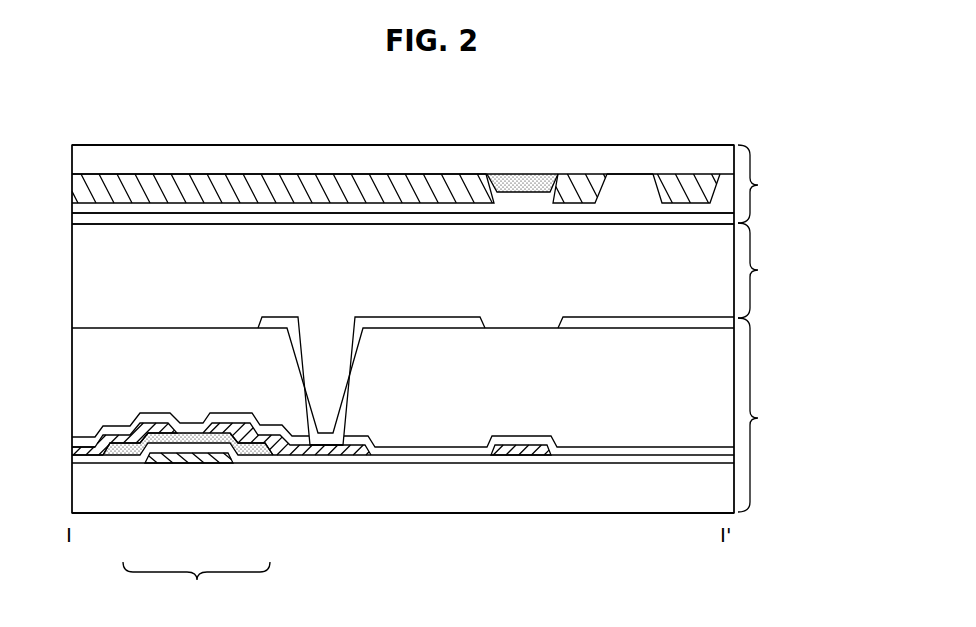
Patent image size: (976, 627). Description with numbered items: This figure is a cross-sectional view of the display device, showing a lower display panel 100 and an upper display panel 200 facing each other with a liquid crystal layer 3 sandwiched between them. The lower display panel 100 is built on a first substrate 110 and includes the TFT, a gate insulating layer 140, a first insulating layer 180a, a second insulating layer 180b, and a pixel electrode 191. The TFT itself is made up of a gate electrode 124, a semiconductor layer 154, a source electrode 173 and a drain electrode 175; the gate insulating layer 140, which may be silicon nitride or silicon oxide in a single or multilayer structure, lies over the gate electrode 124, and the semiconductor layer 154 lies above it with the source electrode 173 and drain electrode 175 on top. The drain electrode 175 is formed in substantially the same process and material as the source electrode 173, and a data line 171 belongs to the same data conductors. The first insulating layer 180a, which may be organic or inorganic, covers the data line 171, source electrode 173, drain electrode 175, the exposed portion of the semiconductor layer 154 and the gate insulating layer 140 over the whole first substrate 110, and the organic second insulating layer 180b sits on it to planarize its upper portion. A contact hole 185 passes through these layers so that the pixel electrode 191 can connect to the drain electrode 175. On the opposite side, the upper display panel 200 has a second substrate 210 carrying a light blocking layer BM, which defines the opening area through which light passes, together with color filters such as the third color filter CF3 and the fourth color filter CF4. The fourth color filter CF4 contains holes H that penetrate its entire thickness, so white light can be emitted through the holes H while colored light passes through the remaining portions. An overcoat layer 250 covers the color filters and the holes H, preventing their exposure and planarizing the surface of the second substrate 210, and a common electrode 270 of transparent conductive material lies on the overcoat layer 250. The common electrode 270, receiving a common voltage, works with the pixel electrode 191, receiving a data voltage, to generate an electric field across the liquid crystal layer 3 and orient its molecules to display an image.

The upper display panel 200 is at (436, 184).
The second substrate 210 is at (182, 160).
The overcoat layer 250 is at (262, 209).
The third color filter CF3 is at (339, 192).
The common electrode 270 is at (415, 219).
The light blocking layer BM is at (520, 186).
The fourth color filter CF4 is at (578, 190).
The holes H is at (637, 189).
The liquid crystal layer 3 is at (424, 270).
The lower display panel 100 is at (436, 329).
The first substrate 110 is at (375, 492).
The gate electrode 124 is at (187, 455).
The gate insulating layer 140 is at (412, 460).
The semiconductor layer 154 is at (207, 437).
The source electrode 173 is at (167, 432).
The drain electrode 175 is at (217, 420).
The data line 171 is at (520, 452).
The first insulating layer 180a is at (452, 450).
The second insulating layer 180b is at (597, 430).
The pixel electrode 191 is at (412, 320).
The contact hole 185 is at (338, 347).
The thin film transistor TFT is at (196, 585).